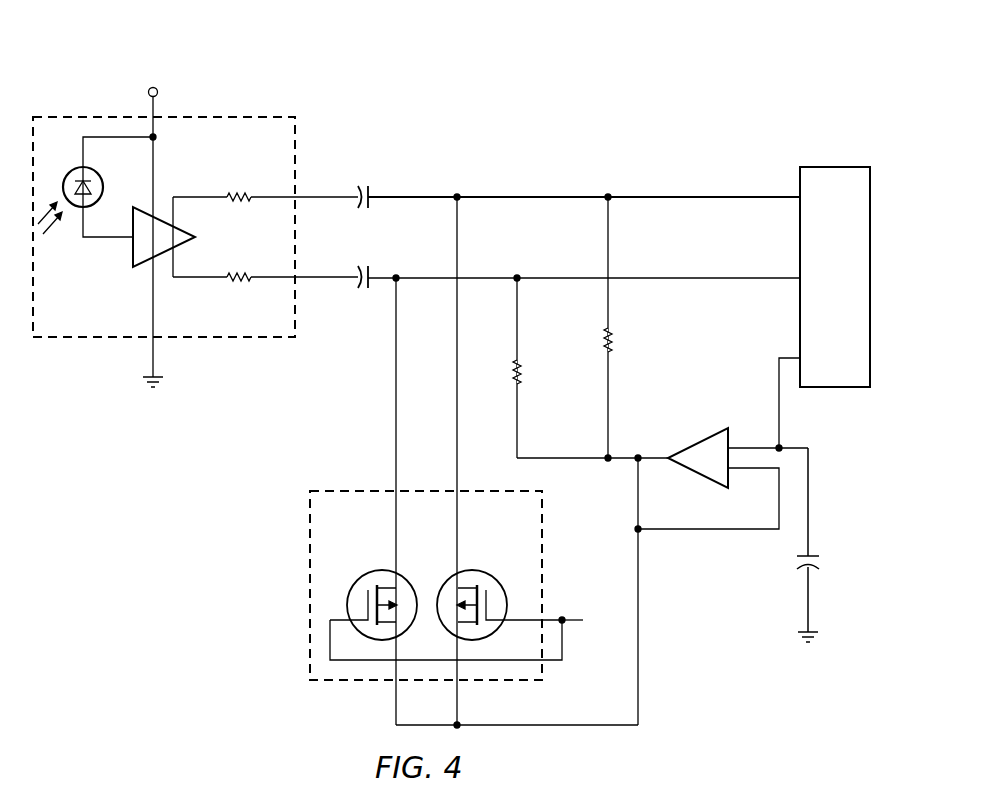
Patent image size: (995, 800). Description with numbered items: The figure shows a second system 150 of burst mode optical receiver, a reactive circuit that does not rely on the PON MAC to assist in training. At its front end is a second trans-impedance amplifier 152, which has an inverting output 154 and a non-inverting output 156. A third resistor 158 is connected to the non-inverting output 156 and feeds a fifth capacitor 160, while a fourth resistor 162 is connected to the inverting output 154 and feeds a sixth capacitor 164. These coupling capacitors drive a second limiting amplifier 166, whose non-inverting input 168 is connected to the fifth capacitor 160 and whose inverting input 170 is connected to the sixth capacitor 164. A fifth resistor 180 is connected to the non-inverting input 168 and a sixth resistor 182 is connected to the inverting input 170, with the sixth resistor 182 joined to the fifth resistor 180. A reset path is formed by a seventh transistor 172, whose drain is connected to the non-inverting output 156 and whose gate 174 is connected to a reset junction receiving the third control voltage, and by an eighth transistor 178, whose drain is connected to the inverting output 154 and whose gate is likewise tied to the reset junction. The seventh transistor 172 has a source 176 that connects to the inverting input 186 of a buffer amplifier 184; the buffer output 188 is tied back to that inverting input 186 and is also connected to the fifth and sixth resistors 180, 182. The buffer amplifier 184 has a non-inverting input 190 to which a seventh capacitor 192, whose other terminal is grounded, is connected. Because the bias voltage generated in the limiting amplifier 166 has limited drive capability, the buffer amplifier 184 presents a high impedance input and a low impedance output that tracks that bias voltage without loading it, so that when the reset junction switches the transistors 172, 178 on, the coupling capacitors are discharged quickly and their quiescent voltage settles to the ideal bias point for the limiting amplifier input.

The second system 150 is at (568, 80).
The second trans-impedance amplifier 152 is at (132, 250).
The inverting output 154 is at (200, 277).
The non-inverting output 156 is at (198, 197).
The third resistor 158 is at (243, 197).
The fifth capacitor 160 is at (360, 187).
The fourth resistor 162 is at (240, 279).
The sixth capacitor 164 is at (360, 288).
The second limiting amplifier 166 is at (840, 167).
The non-inverting input 168 is at (678, 197).
The inverting input 170 is at (678, 278).
The seventh transistor 172 is at (378, 571).
The gate 174 is at (570, 620).
The source 176 is at (522, 727).
The eighth transistor 178 is at (478, 571).
The fifth resistor 180 is at (612, 340).
The sixth resistor 182 is at (522, 375).
The buffer amplifier 184 is at (700, 442).
The inverting input 186 is at (690, 529).
The output 188 is at (655, 460).
The non-inverting input 190 is at (800, 448).
The seventh capacitor 192 is at (802, 560).